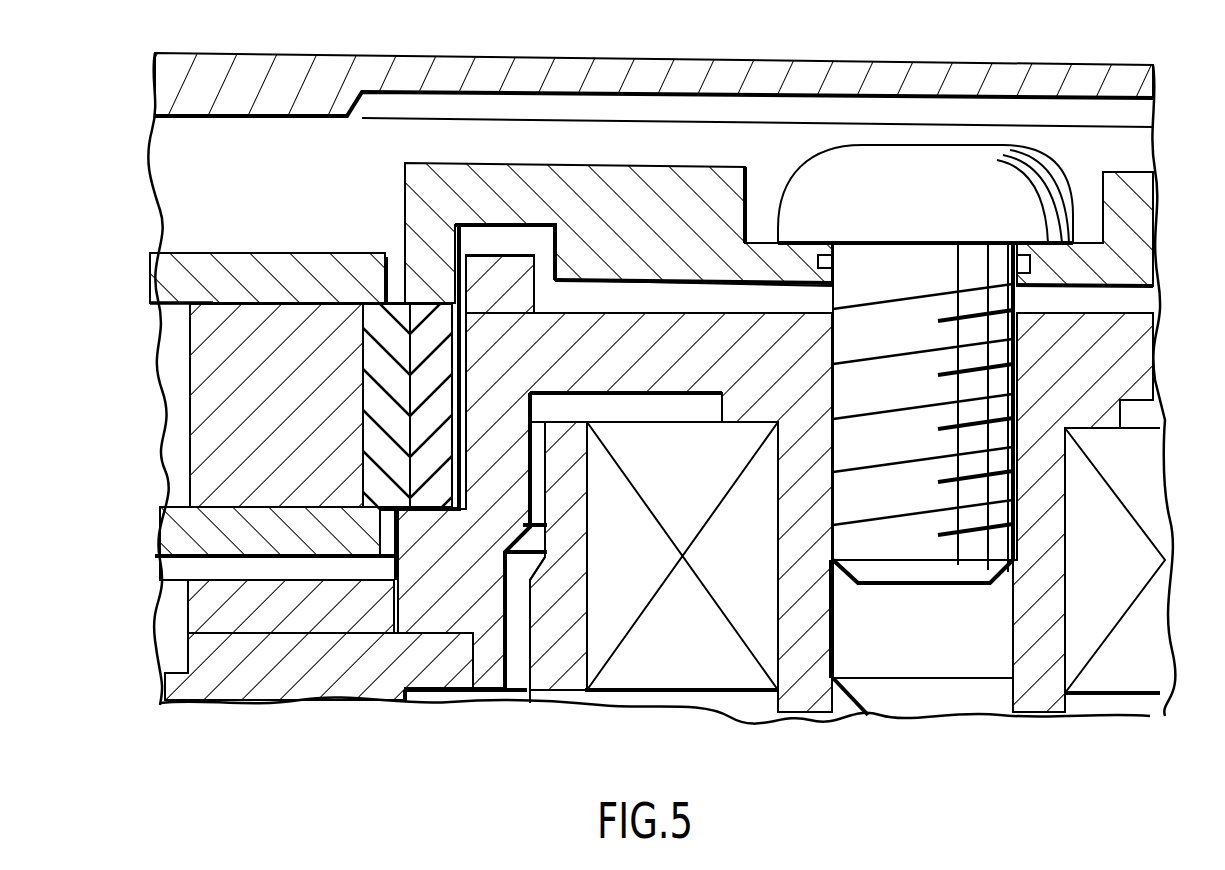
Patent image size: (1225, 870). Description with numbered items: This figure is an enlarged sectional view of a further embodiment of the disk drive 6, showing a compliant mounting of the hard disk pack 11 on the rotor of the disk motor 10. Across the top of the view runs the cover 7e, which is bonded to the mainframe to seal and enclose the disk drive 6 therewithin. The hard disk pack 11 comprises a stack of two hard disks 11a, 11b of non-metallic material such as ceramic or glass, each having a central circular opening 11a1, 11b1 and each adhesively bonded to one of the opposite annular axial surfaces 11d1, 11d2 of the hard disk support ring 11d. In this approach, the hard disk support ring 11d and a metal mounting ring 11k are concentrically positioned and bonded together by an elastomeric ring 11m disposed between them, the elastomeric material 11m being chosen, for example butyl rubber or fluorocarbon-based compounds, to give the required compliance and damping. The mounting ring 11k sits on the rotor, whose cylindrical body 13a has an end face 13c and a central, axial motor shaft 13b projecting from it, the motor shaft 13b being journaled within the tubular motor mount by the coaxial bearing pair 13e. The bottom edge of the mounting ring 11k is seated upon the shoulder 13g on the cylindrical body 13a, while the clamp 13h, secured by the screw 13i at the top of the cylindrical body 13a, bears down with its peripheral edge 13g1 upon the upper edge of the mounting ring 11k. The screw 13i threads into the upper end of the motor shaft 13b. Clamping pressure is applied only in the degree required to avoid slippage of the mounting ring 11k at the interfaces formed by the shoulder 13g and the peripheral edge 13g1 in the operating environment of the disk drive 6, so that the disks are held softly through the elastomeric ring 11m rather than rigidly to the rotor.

The disk drive 6 is at (692, 52).
The cover 7e is at (525, 57).
The disk motor 10 is at (205, 608).
The hard disk pack 11 is at (205, 440).
The hard disk 11a is at (165, 283).
The central circular opening 11a1 is at (391, 258).
The hard disk 11b is at (185, 530).
The central circular opening 11b1 is at (392, 520).
The hard disk support ring 11d is at (210, 395).
The annular axial surface 11d1 is at (204, 314).
The annular axial surface 11d2 is at (214, 490).
The mounting ring 11k is at (443, 367).
The elastomeric ring 11m is at (413, 417).
The cylindrical body 13a is at (497, 447).
The motor shaft 13b is at (1033, 703).
The end face 13c is at (722, 348).
The coaxial bearing pair 13e is at (708, 658).
The shoulder 13g is at (460, 507).
The peripheral edge 13g1 is at (428, 303).
The clamp 13h is at (672, 185).
The screw 13i is at (1000, 160).